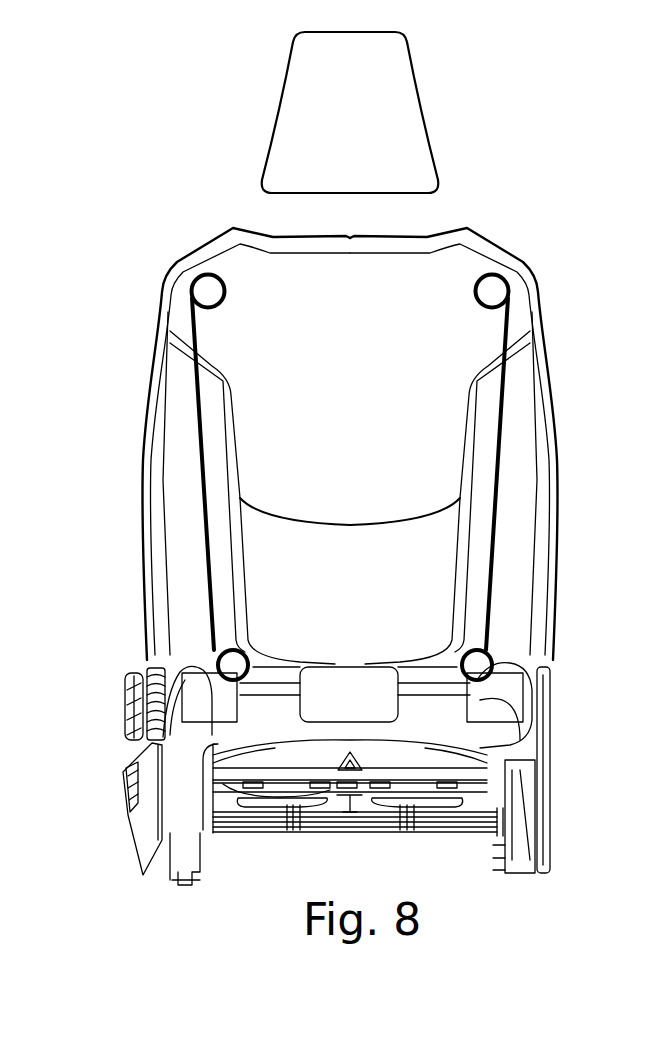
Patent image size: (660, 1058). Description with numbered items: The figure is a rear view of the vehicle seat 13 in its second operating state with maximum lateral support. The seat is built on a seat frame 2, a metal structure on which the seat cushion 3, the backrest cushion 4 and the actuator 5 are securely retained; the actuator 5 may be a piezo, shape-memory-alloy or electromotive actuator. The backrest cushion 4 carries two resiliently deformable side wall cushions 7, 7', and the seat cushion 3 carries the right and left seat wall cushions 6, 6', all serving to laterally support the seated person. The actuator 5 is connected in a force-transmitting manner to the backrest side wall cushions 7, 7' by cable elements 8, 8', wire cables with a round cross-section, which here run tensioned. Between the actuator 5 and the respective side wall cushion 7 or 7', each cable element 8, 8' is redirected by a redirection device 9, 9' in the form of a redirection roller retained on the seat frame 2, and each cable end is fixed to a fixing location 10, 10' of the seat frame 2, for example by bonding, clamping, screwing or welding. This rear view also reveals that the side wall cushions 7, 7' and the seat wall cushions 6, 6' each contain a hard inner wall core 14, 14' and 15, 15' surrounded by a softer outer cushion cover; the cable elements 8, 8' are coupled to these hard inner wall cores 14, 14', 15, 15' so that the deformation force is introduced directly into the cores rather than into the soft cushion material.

The seat frame 2 is at (178, 815).
The seat cushion 3 is at (288, 715).
The backrest cushion 4 is at (357, 394).
The actuator 5 is at (383, 723).
The right seat wall cushion 6 is at (585, 770).
The left seat wall cushion 6' is at (100, 707).
The right side wall cushion of backrest 7 is at (489, 444).
The left side wall cushion of backrest 7' is at (208, 444).
The cable element 8 is at (549, 452).
The cable element 8' is at (149, 452).
The redirection device 9 is at (550, 607).
The redirection device 9' is at (405, 620).
The fixing location 10 is at (182, 250).
The fixing location 10' is at (526, 250).
The vehicle seat 13 is at (470, 102).
The hard inner wall core 14 is at (498, 497).
The hard inner wall core 14' is at (243, 497).
The hard inner wall core 15 is at (554, 711).
The hard inner wall core 15' is at (116, 692).